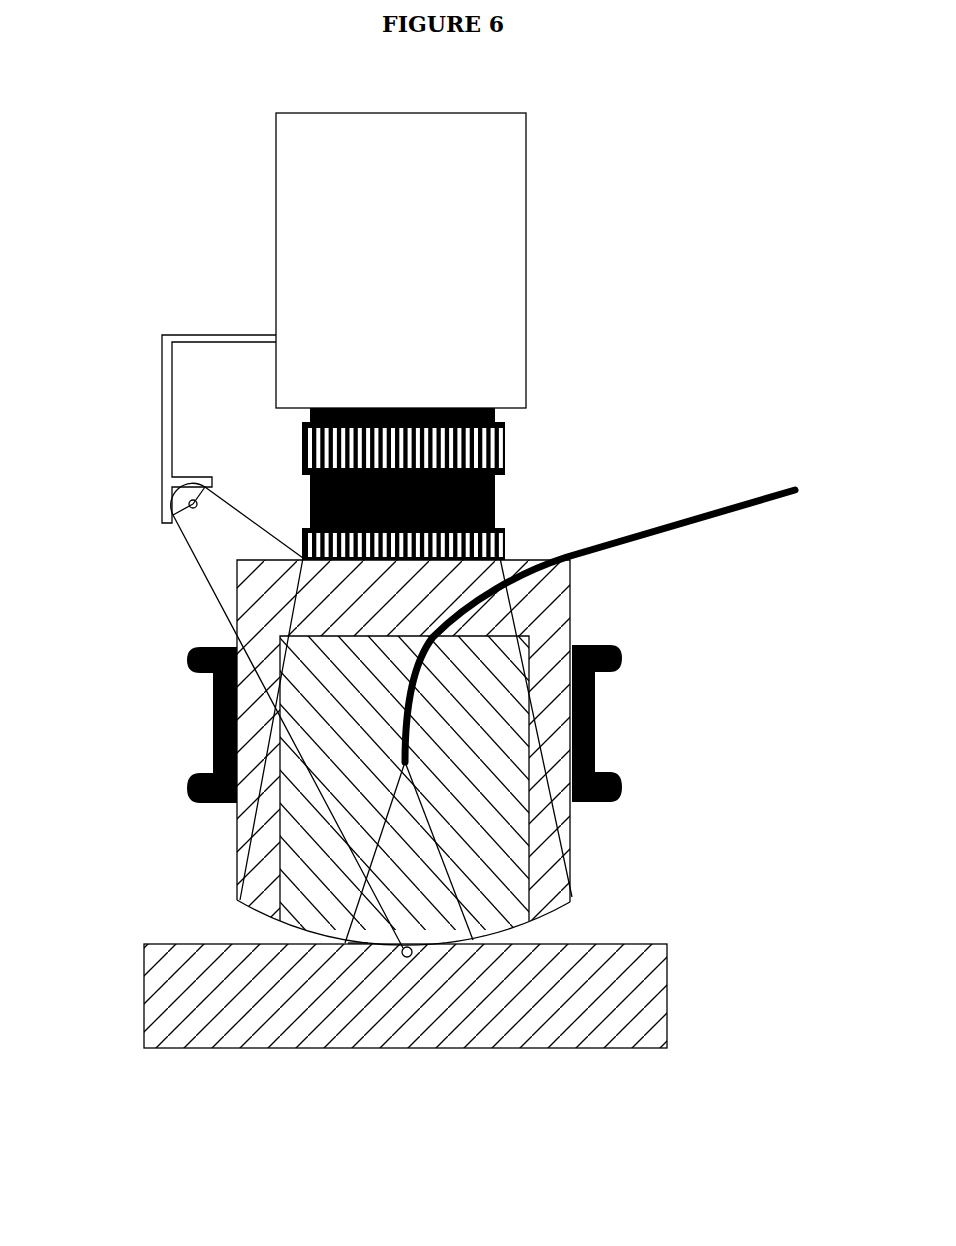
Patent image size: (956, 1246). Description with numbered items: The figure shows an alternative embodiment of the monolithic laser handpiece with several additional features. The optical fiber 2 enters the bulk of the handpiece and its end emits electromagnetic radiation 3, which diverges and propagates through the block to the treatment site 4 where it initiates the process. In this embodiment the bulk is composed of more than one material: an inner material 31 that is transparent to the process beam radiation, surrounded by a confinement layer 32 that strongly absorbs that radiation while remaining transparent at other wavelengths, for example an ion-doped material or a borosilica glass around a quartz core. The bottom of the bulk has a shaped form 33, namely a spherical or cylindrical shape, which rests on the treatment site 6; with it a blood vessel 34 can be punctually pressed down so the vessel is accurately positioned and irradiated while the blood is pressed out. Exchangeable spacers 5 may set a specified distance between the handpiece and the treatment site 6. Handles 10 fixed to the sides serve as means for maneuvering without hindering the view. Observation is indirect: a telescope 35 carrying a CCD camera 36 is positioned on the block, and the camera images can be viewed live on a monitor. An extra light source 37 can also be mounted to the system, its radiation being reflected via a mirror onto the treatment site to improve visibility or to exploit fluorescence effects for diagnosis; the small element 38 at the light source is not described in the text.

The optical fiber 2 is at (757, 525).
The electromagnetic radiation 3 is at (380, 837).
The treatment site 4 is at (448, 897).
The exchangeable spacers 5 is at (575, 897).
The treatment site 6 is at (657, 965).
The handles 10 is at (208, 728).
The inner material 31 is at (500, 650).
The confinement layer 32 is at (255, 612).
The shaped form of the bulk bottom 33 is at (358, 940).
The blood vessel 34 is at (402, 958).
The telescope 35 is at (508, 467).
The CCD camera 36 is at (513, 303).
The extra light source 37 is at (170, 496).
The LED 38 is at (170, 506).